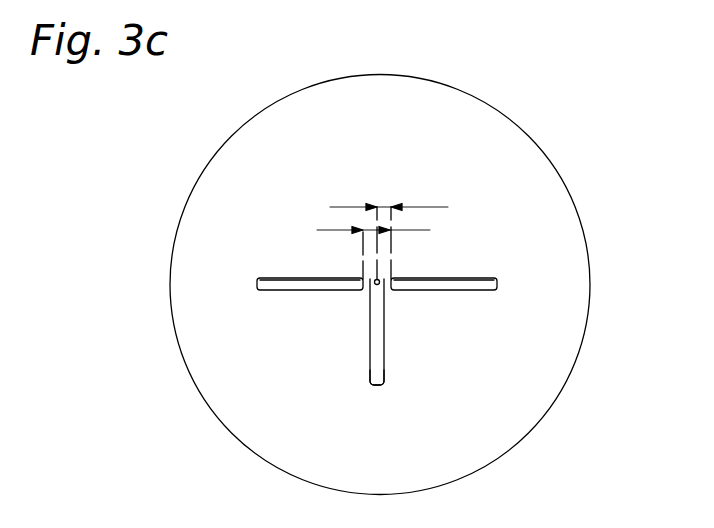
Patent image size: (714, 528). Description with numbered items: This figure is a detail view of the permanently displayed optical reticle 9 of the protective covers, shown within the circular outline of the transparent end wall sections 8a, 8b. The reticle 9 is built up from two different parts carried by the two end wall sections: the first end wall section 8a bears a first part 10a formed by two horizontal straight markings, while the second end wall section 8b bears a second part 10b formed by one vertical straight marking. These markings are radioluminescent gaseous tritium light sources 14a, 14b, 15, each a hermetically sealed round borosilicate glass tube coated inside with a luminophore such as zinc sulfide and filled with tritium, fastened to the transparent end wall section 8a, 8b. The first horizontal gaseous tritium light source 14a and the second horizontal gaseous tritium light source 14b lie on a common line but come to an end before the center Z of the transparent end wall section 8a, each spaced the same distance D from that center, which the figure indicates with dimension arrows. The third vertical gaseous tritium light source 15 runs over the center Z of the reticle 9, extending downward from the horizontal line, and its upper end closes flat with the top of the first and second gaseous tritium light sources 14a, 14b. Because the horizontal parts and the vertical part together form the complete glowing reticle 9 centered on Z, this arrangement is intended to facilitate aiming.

The first transparent end wall section 8a is at (428, 285).
The second transparent end wall section 8b is at (562, 180).
The first part of the reticle 10a is at (282, 275).
The second part of the reticle 10b is at (386, 357).
The first horizontal gaseous tritium light source 14a is at (307, 291).
The second horizontal gaseous tritium light source 14b is at (443, 291).
The third vertical gaseous tritium light source 15 is at (369, 378).
The permanently displayed optical reticle 9 is at (359, 300).
The center Z is at (383, 280).
The distance D is at (420, 206).